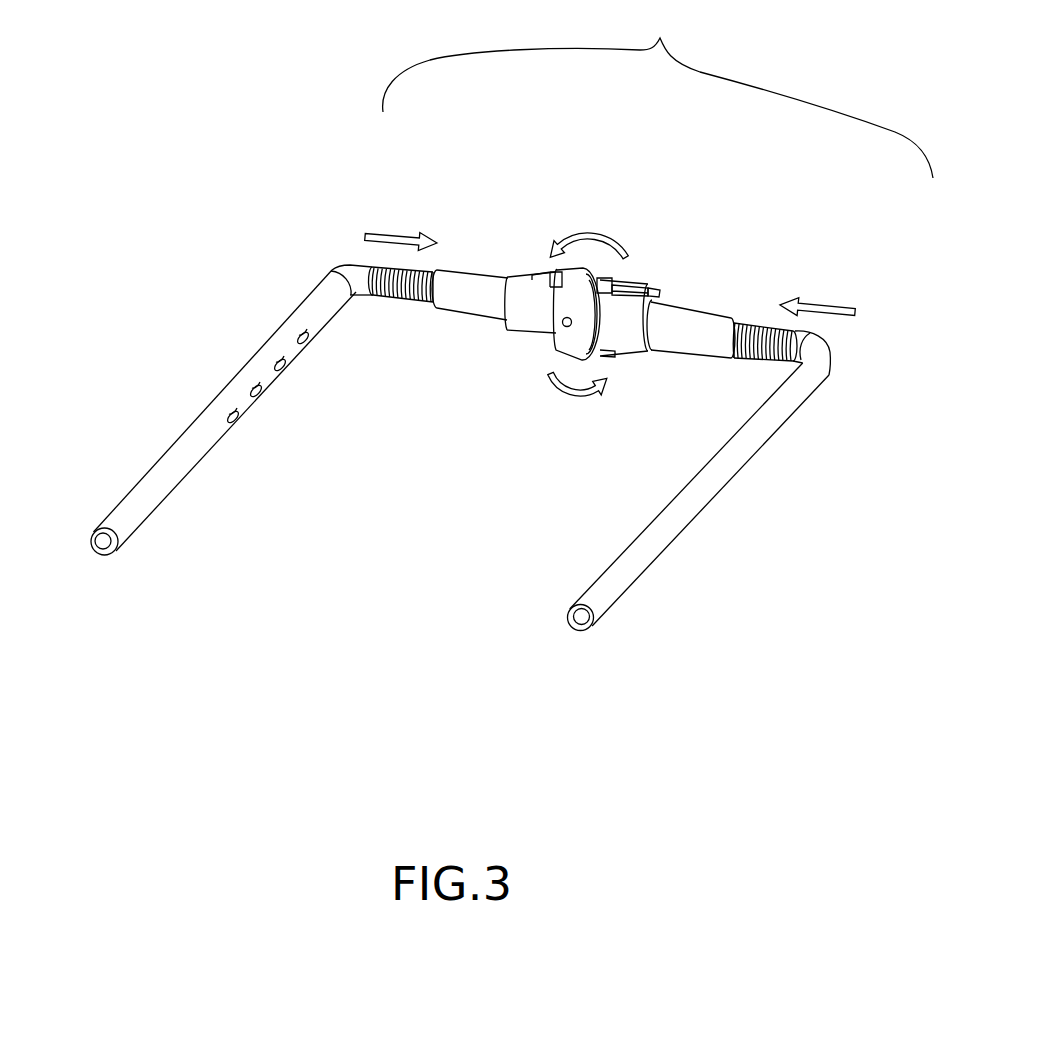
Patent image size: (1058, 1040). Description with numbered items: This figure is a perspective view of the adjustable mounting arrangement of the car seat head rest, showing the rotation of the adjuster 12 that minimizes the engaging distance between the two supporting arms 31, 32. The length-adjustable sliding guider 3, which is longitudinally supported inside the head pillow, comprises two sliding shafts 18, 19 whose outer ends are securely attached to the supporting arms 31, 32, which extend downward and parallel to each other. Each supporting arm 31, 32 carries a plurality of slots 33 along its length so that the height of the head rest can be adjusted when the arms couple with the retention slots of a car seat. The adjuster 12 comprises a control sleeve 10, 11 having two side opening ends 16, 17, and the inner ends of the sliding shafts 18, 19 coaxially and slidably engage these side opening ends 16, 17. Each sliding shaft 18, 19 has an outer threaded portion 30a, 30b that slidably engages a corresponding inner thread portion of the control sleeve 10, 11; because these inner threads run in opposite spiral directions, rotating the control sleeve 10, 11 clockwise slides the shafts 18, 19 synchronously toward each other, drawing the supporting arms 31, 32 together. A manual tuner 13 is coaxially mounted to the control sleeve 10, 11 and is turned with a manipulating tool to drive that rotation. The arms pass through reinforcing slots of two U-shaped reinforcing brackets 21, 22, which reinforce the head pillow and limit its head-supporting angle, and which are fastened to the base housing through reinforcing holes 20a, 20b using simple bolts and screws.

The sliding guider 3 is at (658, 91).
The control sleeve 10 is at (452, 285).
The control sleeve 11 is at (690, 298).
The adjuster 12 is at (562, 325).
The manual tuner 13 is at (552, 320).
The side opening end 16 is at (433, 312).
The side opening end 17 is at (733, 363).
The sliding shaft 18 is at (428, 270).
The sliding shaft 19 is at (768, 330).
The reinforcing hole 20a is at (540, 260).
The reinforcing hole 20b is at (655, 280).
The U-shaped reinforcing bracket 21 is at (548, 332).
The U-shaped reinforcing bracket 22 is at (630, 356).
The outer threaded portion 30a is at (370, 265).
The outer threaded portion 30b is at (760, 330).
The supporting arm 31 is at (205, 422).
The supporting arm 32 is at (712, 495).
The slot 33 is at (283, 368).